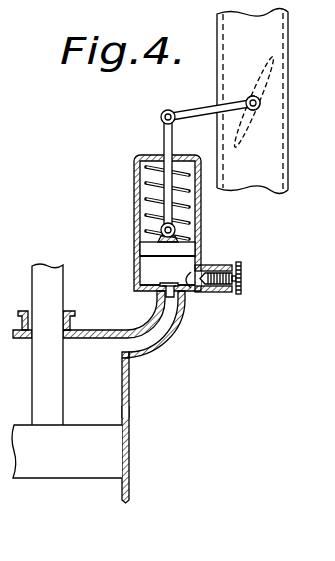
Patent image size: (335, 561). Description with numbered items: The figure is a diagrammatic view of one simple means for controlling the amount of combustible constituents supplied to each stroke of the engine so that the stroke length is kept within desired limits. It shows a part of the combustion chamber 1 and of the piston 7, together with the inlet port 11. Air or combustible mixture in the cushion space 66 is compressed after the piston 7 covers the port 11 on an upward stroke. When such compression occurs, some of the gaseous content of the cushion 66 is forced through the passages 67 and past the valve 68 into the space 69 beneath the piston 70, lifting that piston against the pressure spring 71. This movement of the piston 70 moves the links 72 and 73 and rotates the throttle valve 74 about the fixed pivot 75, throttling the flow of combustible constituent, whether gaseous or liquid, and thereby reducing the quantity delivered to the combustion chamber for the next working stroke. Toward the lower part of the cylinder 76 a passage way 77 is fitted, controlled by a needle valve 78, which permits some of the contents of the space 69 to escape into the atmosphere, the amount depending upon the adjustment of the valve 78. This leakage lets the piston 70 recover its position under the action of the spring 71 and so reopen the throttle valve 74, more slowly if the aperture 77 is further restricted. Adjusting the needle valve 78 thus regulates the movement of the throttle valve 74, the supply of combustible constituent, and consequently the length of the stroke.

The combustion chamber 1 is at (130, 452).
The piston 7 is at (67, 451).
The inlet port 11 is at (131, 401).
The cushion space 66 is at (57, 344).
The passages 67 is at (164, 318).
The valve 68 is at (150, 281).
The space 69 is at (167, 272).
The piston 70 is at (172, 247).
The pressure spring 71 is at (150, 199).
The link 72 is at (163, 131).
The link 73 is at (193, 110).
The throttle valve 74 is at (259, 80).
The fixed pivot 75 is at (259, 107).
The cylinder 76 is at (135, 168).
The passage way 77 is at (190, 292).
The needle valve 78 is at (242, 279).